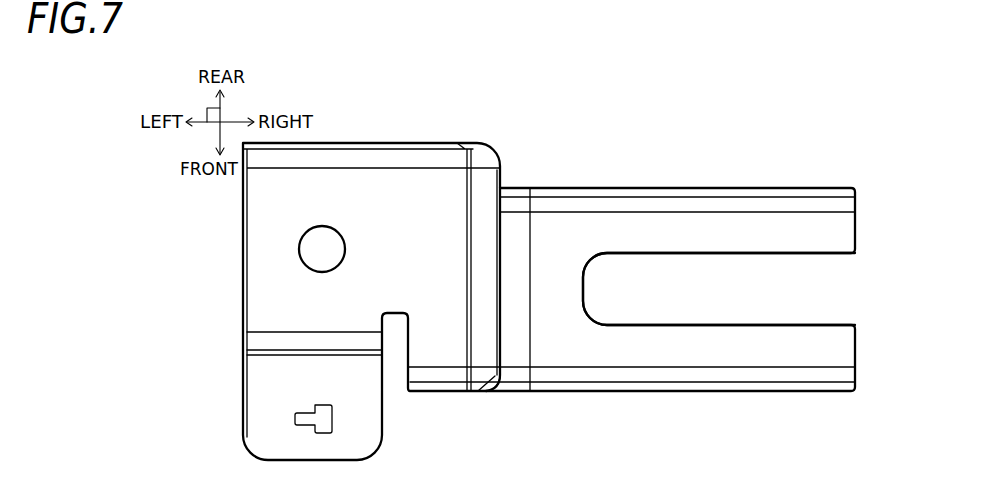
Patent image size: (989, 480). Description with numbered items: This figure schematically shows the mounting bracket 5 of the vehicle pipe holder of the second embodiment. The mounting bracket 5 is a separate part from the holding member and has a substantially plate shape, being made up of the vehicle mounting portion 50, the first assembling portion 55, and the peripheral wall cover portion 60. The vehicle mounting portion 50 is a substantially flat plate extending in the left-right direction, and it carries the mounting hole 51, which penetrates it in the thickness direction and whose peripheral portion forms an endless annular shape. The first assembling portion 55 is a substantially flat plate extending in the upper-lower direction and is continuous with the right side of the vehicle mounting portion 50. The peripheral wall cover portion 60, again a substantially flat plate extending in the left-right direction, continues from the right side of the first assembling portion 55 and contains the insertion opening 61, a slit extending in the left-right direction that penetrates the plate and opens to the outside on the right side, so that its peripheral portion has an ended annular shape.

The mounting bracket 5 is at (527, 186).
The vehicle mounting portion 50 is at (343, 160).
The mounting hole 51 is at (303, 250).
The first assembling portion 55 is at (493, 378).
The peripheral wall cover portion 60 is at (690, 207).
The insertion opening 61 is at (707, 287).